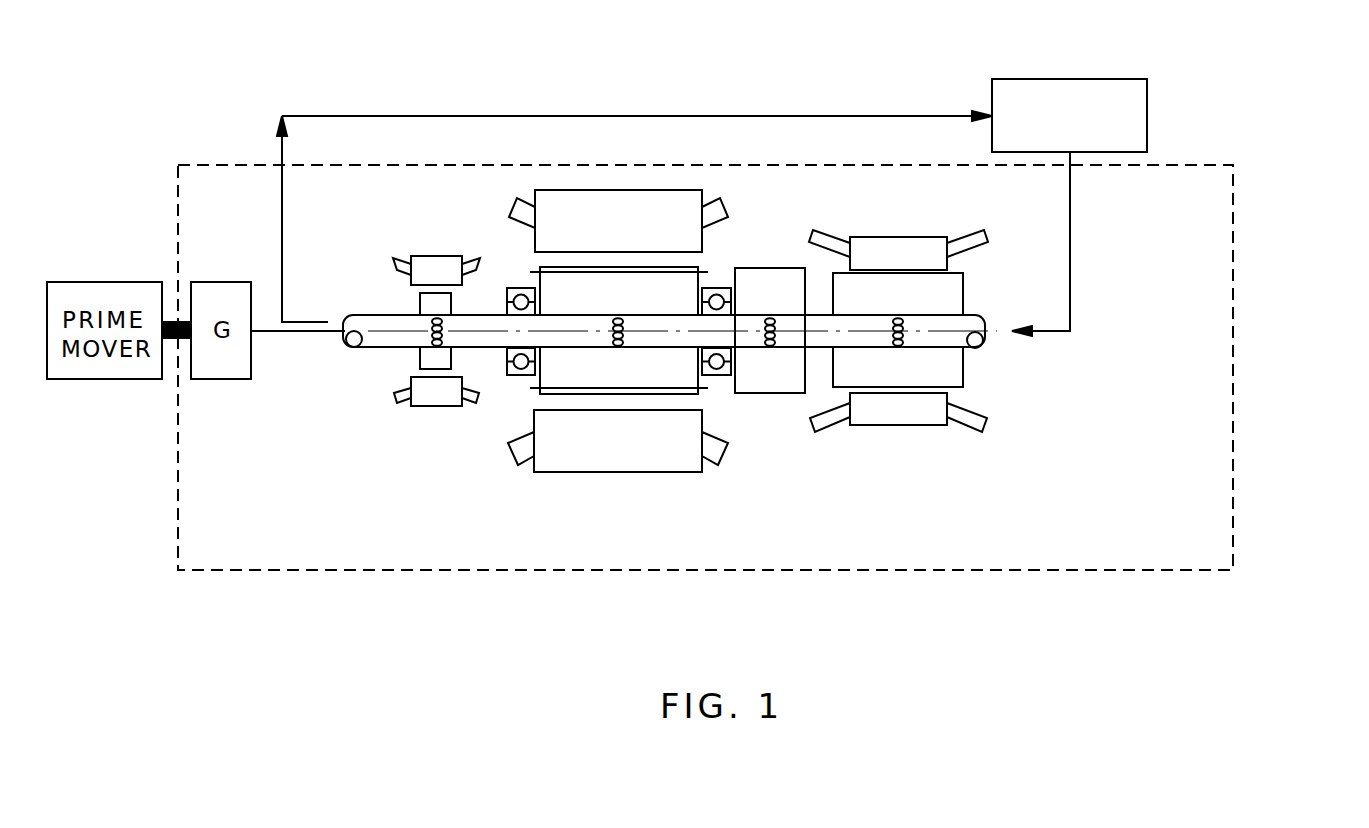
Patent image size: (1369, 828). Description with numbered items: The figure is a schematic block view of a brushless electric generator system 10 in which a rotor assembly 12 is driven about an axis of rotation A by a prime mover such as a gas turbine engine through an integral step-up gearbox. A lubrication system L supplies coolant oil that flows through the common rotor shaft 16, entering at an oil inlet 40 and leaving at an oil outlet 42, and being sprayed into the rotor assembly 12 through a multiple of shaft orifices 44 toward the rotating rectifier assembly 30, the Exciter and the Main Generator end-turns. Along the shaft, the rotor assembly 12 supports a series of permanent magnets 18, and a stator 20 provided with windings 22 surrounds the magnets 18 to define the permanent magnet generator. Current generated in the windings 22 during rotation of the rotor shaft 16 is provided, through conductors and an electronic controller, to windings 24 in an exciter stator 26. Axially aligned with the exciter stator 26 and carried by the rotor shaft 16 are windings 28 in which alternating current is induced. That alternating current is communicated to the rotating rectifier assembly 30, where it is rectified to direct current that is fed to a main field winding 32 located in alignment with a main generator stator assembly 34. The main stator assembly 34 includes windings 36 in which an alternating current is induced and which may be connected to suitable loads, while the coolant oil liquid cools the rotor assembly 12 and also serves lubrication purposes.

The brushless electric generator system 10 is at (1256, 146).
The rotor assembly 12 is at (378, 314).
The rotor shaft 16 is at (642, 334).
The permanent magnets 18 is at (443, 307).
The stator 20 is at (437, 267).
The windings 22 is at (438, 310).
The windings 24 is at (926, 367).
The exciter stator 26 is at (888, 415).
The windings 28 is at (957, 293).
The rotating rectifier assembly 30 is at (803, 308).
The main field winding 32 is at (633, 307).
The main generator stator assembly 34 is at (631, 455).
The windings 36 is at (645, 357).
The oil inlet 40 is at (988, 342).
The oil outlet 42 is at (345, 348).
The shaft orifices 44 is at (770, 328).
The axis of rotation A is at (387, 332).
The lubrication system L is at (1137, 122).